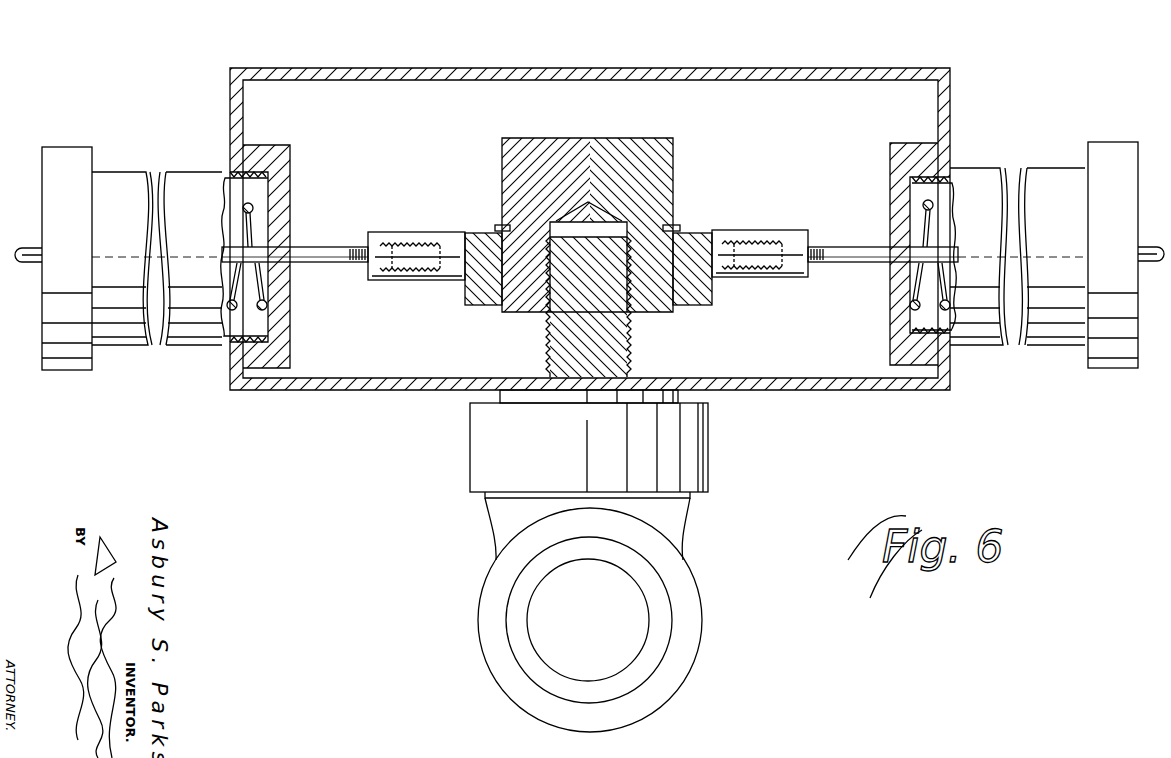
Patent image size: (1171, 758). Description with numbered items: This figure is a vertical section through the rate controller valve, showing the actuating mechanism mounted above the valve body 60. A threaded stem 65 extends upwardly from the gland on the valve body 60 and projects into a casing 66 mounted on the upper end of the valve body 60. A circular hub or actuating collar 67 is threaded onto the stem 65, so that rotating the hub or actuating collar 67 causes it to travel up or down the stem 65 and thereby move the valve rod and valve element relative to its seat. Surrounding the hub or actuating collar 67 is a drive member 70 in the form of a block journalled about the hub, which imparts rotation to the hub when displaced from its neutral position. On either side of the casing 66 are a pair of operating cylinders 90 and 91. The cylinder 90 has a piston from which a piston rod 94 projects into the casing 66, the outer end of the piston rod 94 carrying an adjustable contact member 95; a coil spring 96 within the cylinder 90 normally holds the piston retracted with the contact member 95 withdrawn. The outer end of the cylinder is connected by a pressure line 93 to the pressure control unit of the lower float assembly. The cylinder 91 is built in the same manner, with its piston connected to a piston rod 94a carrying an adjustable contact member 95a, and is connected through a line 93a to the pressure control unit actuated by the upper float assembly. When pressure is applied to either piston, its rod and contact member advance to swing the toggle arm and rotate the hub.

The valve body 60 is at (667, 515).
The threaded stem 65 is at (550, 342).
The casing 66 is at (757, 68).
The hub or actuating collar 67 is at (585, 138).
The drive member 70 is at (700, 305).
The operating cylinder 90 is at (110, 172).
The operating cylinder 91 is at (1047, 347).
The pressure line 93 is at (25, 247).
The line 93a is at (1150, 247).
The piston rod 94 is at (313, 264).
The piston rod 94a is at (858, 247).
The adjustable contact member 95 is at (420, 232).
The adjustable contact member 95a is at (752, 230).
The coil spring 96 is at (253, 210).